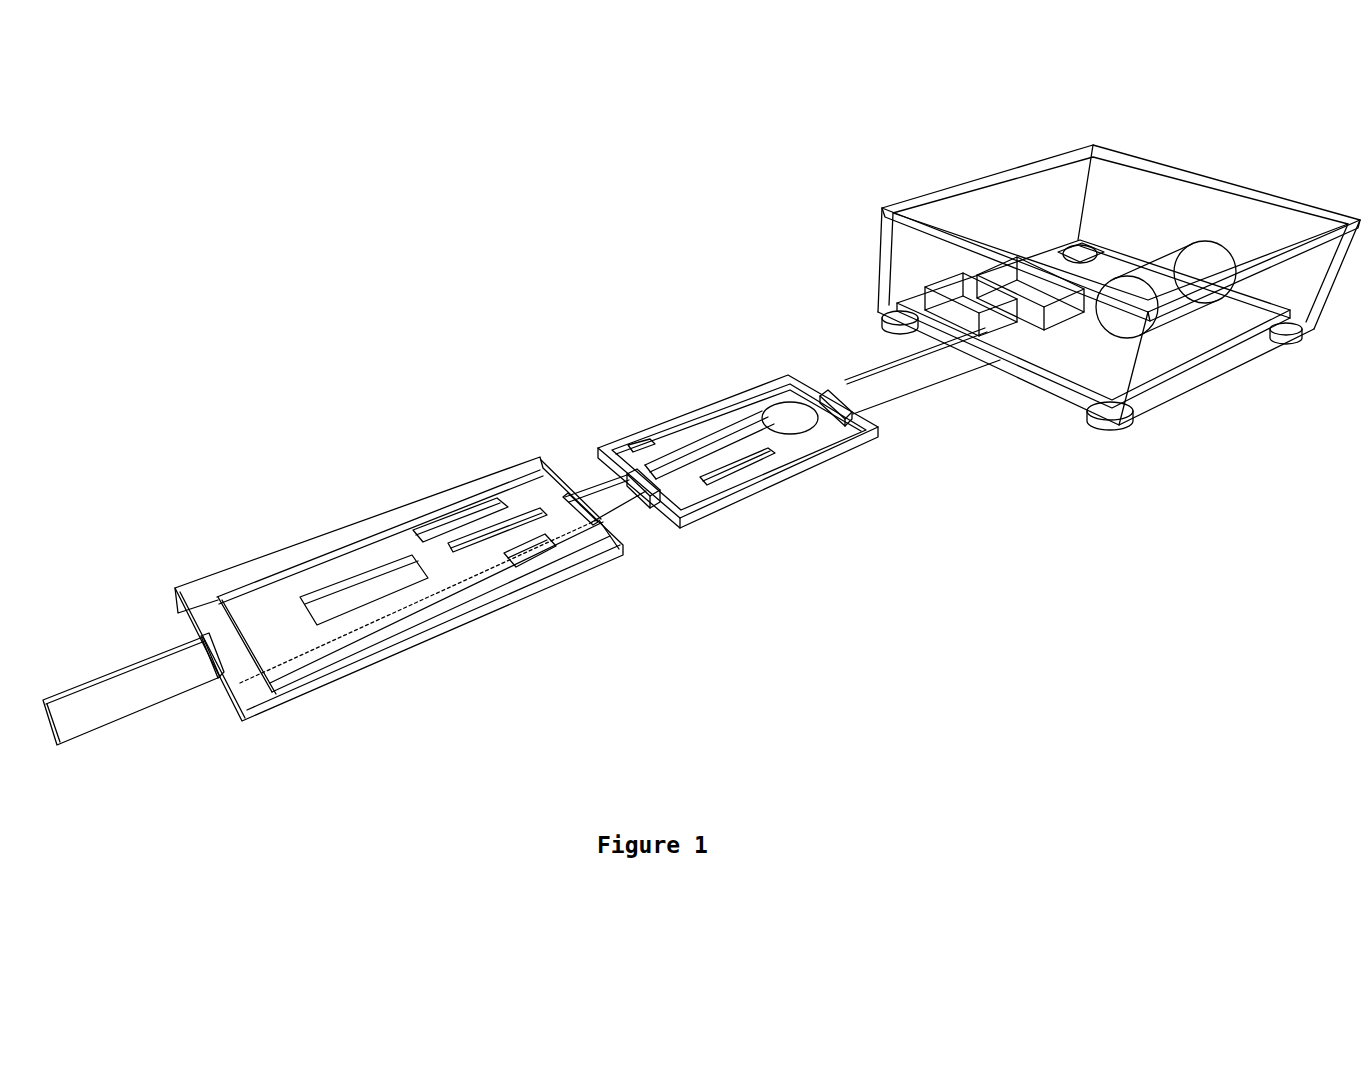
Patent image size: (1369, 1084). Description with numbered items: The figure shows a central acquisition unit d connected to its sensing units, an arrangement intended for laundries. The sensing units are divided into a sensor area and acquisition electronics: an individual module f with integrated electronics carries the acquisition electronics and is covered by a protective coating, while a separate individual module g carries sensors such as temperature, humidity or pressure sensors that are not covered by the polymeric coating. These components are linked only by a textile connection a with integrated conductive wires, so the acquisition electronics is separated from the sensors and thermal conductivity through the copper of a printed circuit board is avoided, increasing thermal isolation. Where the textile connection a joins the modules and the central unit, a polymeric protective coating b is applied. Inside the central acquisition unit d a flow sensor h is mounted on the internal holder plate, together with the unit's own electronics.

The textile connection with integrated conductive wires a is at (122, 718).
The polymeric protective coating b is at (243, 722).
The central acquisition unit d is at (1227, 377).
The individual module with integrated electronics with protective coating f is at (395, 655).
The individual module with sensors not covered by the polymeric coating g is at (742, 487).
The flow sensor h is at (1162, 377).